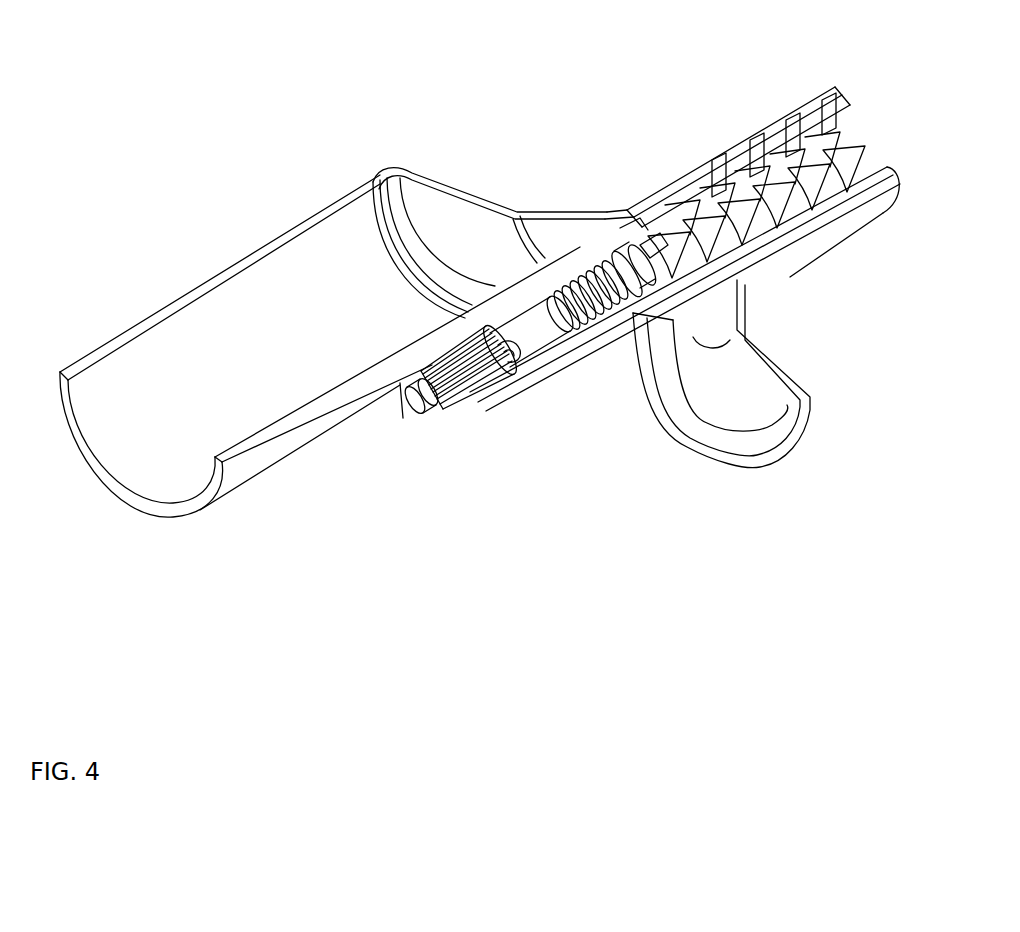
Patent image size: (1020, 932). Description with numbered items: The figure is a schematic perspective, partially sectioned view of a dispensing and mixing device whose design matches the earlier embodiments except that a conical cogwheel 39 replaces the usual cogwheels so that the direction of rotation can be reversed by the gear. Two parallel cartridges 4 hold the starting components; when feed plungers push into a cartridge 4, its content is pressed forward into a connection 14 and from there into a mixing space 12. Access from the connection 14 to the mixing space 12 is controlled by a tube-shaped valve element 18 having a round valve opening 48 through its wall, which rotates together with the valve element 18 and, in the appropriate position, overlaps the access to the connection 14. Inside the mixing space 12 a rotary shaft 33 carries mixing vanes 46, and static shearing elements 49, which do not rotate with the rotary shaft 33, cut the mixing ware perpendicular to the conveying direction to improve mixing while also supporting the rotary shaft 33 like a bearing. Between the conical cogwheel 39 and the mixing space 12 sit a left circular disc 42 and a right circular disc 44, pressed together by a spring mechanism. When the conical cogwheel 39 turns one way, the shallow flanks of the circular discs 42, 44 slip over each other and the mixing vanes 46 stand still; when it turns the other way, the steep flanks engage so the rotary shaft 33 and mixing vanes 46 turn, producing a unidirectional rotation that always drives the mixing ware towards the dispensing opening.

The cartridge 4 is at (189, 382).
The mixing space 12 is at (800, 250).
The connection 14 is at (449, 233).
The valve element 18 is at (625, 222).
The rotary shaft 33 is at (668, 238).
The conical cogwheel 39 is at (477, 388).
The left circular disc 42 is at (513, 352).
The right circular disc 44 is at (530, 330).
The mixing vane 46 is at (693, 245).
The valve opening 48 is at (577, 323).
The static shearing element 49 is at (720, 178).